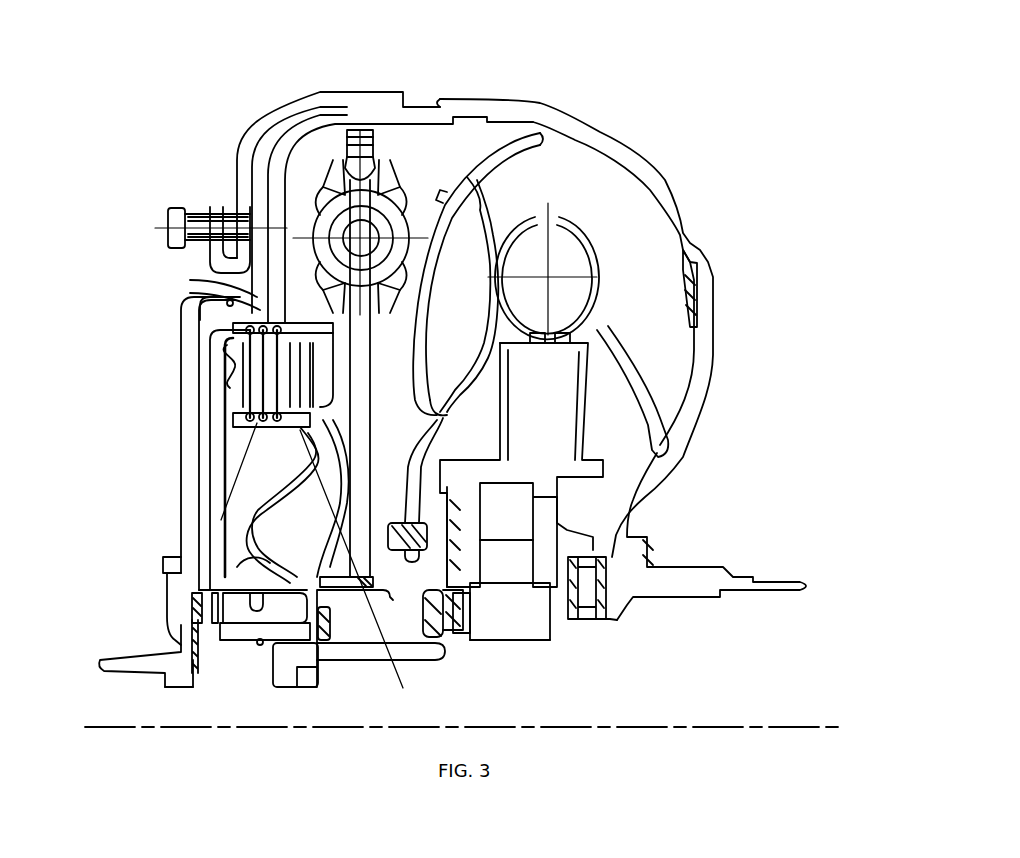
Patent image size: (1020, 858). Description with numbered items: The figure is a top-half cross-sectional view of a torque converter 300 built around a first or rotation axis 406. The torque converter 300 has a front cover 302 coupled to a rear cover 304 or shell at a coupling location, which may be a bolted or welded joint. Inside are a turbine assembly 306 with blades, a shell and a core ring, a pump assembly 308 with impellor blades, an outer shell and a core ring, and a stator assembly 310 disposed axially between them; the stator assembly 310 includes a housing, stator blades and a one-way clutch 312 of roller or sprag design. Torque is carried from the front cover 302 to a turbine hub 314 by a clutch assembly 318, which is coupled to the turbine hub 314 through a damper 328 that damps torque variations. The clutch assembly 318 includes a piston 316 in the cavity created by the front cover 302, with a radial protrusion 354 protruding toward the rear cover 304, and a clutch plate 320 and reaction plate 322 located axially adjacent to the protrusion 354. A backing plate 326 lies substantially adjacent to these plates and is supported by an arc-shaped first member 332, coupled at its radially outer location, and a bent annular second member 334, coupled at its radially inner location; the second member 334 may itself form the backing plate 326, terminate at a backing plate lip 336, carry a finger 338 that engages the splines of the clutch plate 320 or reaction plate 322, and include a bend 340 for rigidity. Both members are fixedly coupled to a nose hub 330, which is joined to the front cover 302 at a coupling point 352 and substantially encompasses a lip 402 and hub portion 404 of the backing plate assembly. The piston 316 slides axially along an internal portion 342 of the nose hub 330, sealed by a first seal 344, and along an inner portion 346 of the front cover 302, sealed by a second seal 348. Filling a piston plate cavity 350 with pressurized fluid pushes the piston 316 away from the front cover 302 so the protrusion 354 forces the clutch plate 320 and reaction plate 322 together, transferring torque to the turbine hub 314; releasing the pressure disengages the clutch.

The torque converter 300 is at (713, 72).
The front cover 302 is at (187, 403).
The rear cover 304 is at (668, 192).
The turbine assembly 306 is at (519, 191).
The pump assembly 308 is at (660, 293).
The stator assembly 310 is at (552, 414).
The one-way clutch 312 is at (526, 622).
The turbine hub 314 is at (392, 639).
The piston 316 is at (217, 468).
The clutch assembly 318 is at (222, 287).
The clutch plate 320 is at (232, 418).
The reaction plate 322 is at (240, 323).
The backing plate 326 is at (269, 305).
The damper 328 is at (433, 413).
The nose hub 330 is at (175, 582).
The first member 332 is at (433, 630).
The second member 334 is at (215, 640).
The backing plate lip 336 is at (432, 414).
The finger 338 is at (177, 583).
The bend 340 is at (440, 637).
The internal portion 342 is at (310, 545).
The first seal 344 is at (243, 605).
The inner portion 346 is at (232, 267).
The second seal 348 is at (235, 293).
The piston plate cavity 350 is at (205, 498).
The coupling point 352 is at (173, 553).
The radial protrusion 354 is at (232, 377).
The lip 402 is at (193, 690).
The hub portion 404 is at (228, 625).
The rotation axis 406 is at (743, 727).